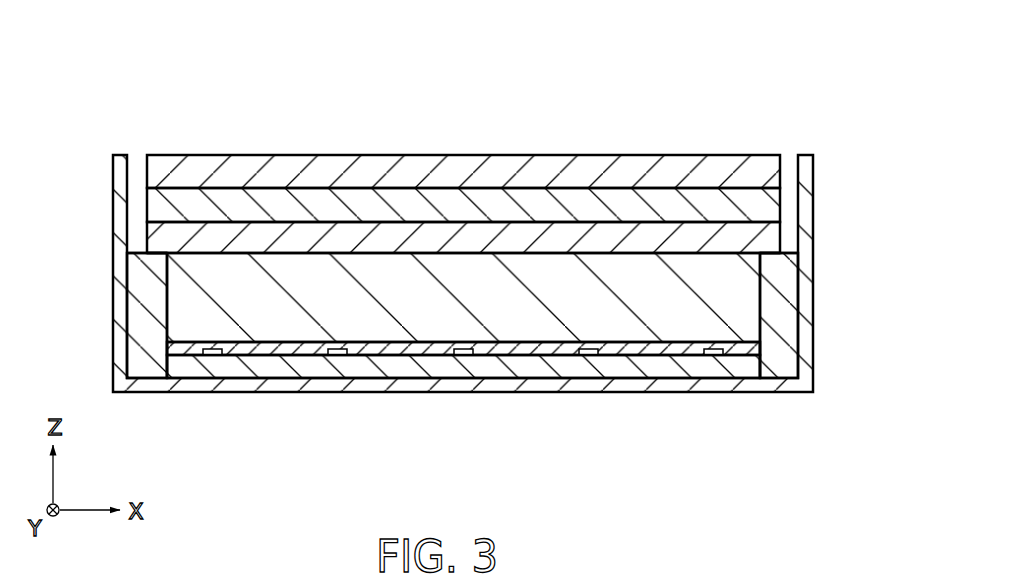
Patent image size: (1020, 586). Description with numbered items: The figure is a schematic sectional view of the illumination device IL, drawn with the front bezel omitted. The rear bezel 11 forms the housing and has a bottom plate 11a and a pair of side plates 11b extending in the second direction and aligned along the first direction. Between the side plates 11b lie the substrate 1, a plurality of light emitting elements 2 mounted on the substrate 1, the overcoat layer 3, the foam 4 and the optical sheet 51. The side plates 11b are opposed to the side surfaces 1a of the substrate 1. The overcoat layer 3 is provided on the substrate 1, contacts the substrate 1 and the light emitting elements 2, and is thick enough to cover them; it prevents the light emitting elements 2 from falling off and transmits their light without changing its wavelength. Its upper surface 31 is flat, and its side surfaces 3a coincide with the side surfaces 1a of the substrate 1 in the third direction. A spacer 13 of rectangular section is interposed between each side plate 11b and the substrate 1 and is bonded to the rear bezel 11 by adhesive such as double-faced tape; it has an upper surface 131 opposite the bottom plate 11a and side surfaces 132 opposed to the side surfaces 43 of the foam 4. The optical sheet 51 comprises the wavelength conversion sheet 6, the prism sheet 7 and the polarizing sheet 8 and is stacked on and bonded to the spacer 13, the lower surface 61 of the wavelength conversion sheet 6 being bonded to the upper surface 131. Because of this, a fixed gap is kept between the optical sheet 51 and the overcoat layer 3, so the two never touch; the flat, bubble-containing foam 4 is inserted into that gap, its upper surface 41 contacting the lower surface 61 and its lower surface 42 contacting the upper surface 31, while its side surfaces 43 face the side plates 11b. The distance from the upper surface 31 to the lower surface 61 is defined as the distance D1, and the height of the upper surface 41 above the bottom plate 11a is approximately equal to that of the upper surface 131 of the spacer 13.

The illumination device IL is at (817, 70).
The rear bezel 11 is at (443, 277).
The bottom plate 11a is at (552, 393).
The side plates 11b is at (120, 177).
The spacer 13 is at (137, 315).
The upper surface of spacer 131 is at (137, 237).
The side surfaces of spacer 132 is at (180, 323).
The lower surface of wavelength conversion sheet 61 is at (150, 263).
The side surfaces of foam 43 is at (155, 313).
The optical sheet 51 is at (522, 204).
The polarizing sheet 8 is at (768, 172).
The prism sheet 7 is at (768, 203).
The wavelength conversion sheet 6 is at (498, 235).
The upper surface of foam 41 is at (683, 240).
The foam 4 is at (608, 330).
The lower surface of foam 42 is at (423, 350).
The overcoat layer 3 is at (672, 350).
The upper surface of overcoat layer 31 is at (305, 338).
The light emitting elements 2 is at (710, 352).
The substrate 1 is at (640, 370).
The side surfaces of overcoat layer 3a is at (157, 350).
The side surfaces of substrate 1a is at (155, 375).
The distance D1 is at (265, 264).